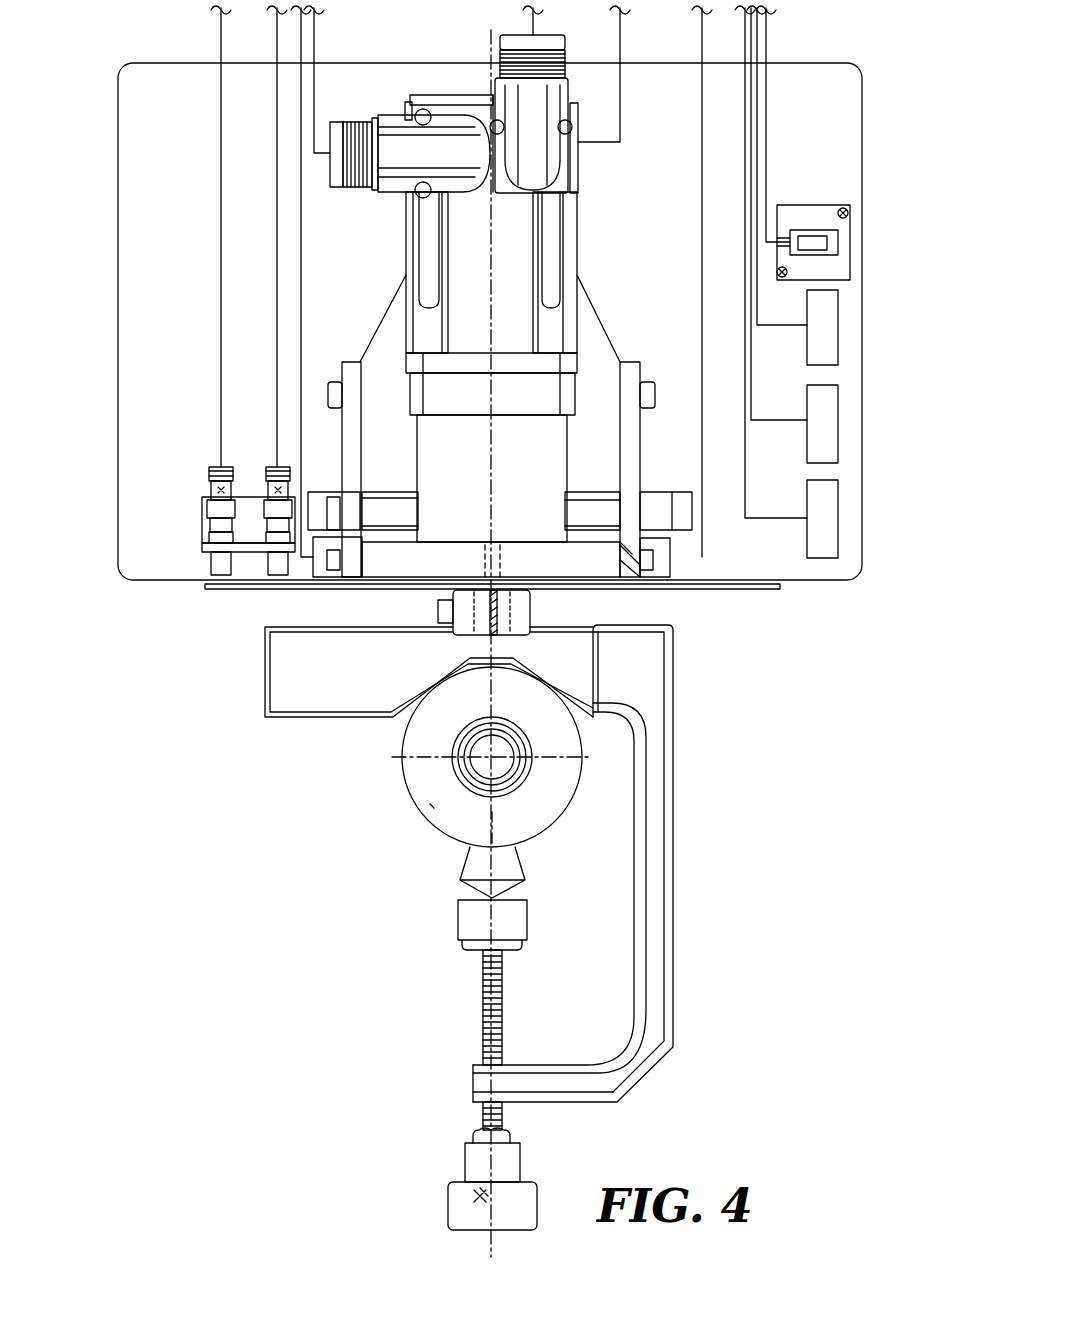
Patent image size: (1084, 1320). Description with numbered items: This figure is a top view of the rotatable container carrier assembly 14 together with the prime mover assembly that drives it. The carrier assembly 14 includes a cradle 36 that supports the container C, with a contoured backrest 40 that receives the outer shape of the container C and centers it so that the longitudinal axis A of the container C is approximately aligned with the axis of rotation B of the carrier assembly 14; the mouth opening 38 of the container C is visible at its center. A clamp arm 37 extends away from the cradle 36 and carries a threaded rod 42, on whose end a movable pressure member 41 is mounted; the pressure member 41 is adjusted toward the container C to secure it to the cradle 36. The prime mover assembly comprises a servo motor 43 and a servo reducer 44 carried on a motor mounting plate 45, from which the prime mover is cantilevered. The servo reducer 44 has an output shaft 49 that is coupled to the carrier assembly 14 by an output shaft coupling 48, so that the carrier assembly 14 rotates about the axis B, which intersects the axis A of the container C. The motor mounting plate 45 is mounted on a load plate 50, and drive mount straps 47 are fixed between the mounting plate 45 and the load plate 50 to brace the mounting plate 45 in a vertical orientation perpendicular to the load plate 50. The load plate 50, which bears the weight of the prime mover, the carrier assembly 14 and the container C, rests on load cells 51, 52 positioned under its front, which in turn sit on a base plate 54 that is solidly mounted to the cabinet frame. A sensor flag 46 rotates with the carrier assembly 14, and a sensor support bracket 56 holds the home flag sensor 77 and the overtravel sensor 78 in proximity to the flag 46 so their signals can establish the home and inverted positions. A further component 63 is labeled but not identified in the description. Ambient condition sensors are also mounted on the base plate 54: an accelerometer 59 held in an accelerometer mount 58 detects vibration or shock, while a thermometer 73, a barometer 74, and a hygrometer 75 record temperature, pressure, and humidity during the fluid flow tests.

The rotatable container carrier assembly 14 is at (462, 996).
The cradle 36 is at (283, 682).
The clamp arm 37 is at (676, 870).
The mouth opening 38 is at (488, 735).
The backrest 40 is at (405, 712).
The movable pressure member 41 is at (475, 920).
The threaded rod 42 is at (487, 1022).
The servo motor 43 is at (518, 253).
The servo reducer 44 is at (538, 452).
The motor mounting plate 45 is at (445, 555).
The sensor flag 46 is at (708, 587).
The drive mount straps 47 is at (345, 428).
The output shaft coupling 48 is at (525, 605).
The output shaft 49 is at (510, 565).
The load plate 50 is at (385, 345).
The load cell 51 is at (318, 565).
The load cell 52 is at (668, 555).
The base plate 54 is at (150, 297).
The sensor support bracket 56 is at (248, 540).
The accelerometer mount 58 is at (808, 213).
The accelerometer 59 is at (822, 241).
The right upper clamp block 63 is at (665, 512).
The thermometer 73 is at (838, 521).
The barometer 74 is at (838, 421).
The hygrometer 75 is at (838, 331).
The home flag sensor 77 is at (210, 495).
The overtravel sensor 78 is at (290, 497).
The longitudinal axis A is at (490, 757).
The axis of rotation B is at (493, 812).
The container C is at (432, 806).